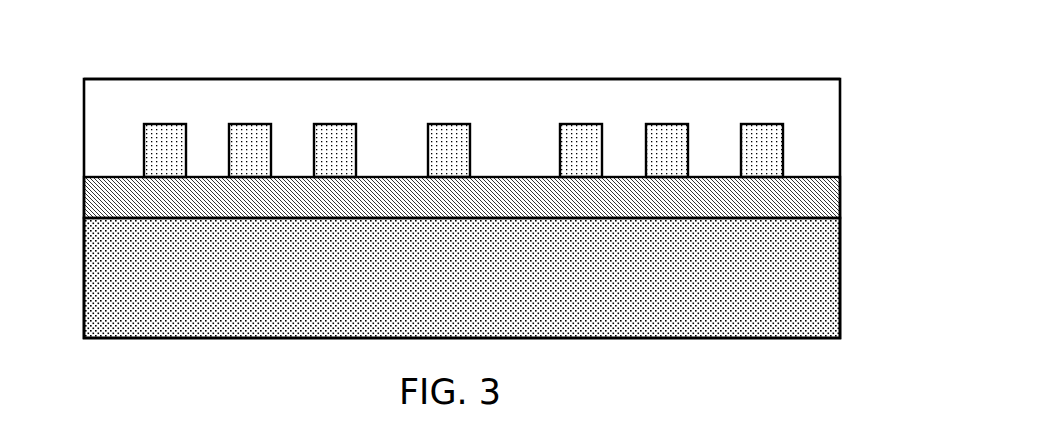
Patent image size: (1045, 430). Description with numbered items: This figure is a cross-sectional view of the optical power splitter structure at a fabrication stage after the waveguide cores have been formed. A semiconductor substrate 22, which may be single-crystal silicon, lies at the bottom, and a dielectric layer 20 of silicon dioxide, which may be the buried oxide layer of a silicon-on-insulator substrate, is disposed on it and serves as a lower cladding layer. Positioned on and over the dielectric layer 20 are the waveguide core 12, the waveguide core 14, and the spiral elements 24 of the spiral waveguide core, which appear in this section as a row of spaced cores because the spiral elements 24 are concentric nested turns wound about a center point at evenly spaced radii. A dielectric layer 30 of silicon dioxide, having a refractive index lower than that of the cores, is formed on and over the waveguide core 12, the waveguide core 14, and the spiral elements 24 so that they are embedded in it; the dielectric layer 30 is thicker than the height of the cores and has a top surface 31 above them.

The waveguide core 12 is at (773, 155).
The waveguide core 14 is at (452, 148).
The dielectric layer 20 is at (768, 200).
The semiconductor substrate 22 is at (771, 277).
The spiral elements 24 is at (160, 152).
The dielectric layer 30 is at (790, 103).
The top surface 31 is at (127, 78).